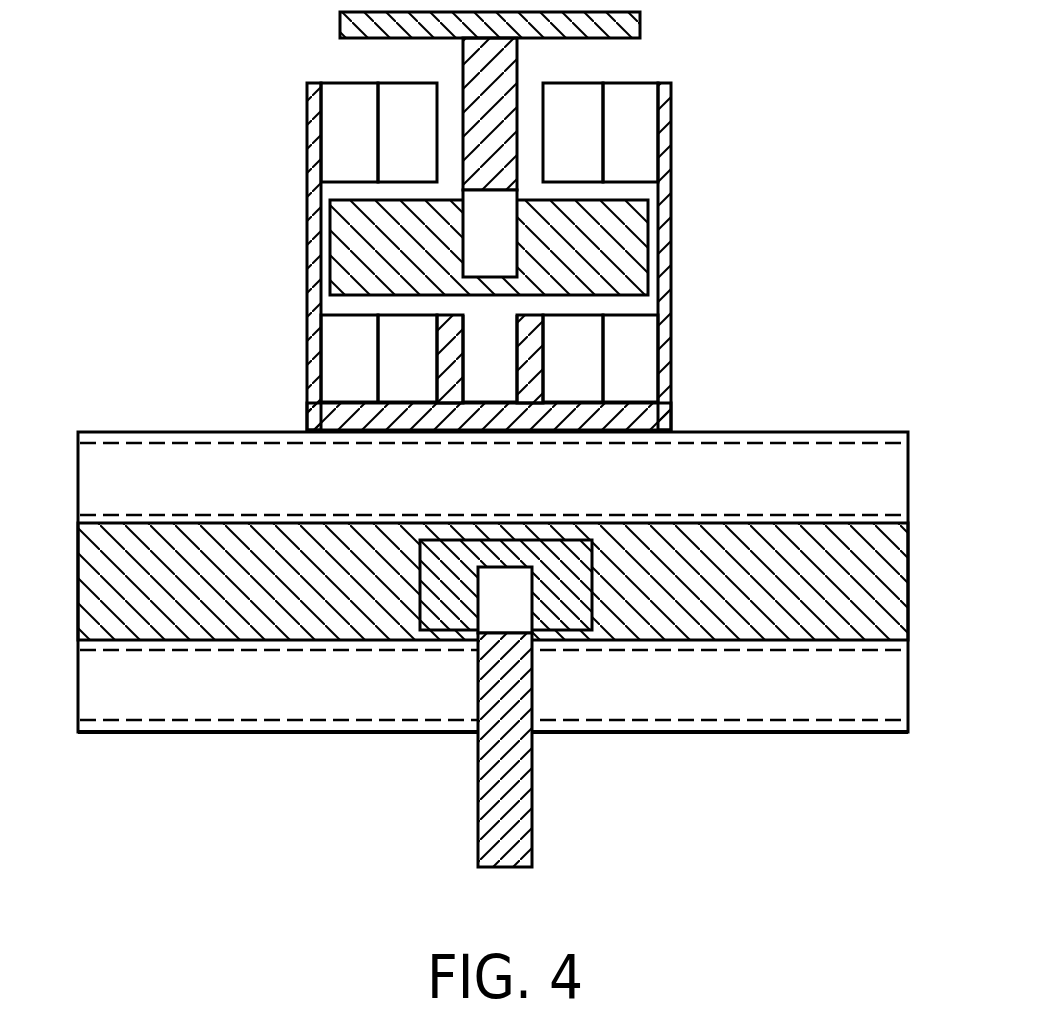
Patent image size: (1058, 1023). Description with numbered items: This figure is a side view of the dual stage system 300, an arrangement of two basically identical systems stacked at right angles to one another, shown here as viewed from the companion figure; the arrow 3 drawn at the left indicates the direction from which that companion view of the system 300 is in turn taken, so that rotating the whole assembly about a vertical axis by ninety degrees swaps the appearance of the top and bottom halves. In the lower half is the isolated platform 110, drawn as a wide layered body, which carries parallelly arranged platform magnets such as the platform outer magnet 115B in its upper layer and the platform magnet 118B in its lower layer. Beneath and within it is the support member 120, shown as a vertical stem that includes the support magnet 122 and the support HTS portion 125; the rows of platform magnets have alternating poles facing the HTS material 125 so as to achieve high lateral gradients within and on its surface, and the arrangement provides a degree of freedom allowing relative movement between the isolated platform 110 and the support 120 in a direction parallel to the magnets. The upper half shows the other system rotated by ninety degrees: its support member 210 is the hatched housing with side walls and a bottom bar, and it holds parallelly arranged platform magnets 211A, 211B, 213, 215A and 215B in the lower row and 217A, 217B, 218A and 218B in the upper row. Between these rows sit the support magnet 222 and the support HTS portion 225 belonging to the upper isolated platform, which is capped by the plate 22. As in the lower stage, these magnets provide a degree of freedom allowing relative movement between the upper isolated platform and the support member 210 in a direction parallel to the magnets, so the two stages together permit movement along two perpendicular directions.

The arrow 3 is at (142, 352).
The top plate 22 is at (640, 22).
The isolated platform 110 is at (798, 432).
The platform outer magnet 115B is at (847, 498).
The platform magnet 118B is at (493, 685).
The support member 120 is at (533, 785).
The support magnet 122 is at (503, 598).
The support HTS portion 125 is at (433, 598).
The support member 210 is at (314, 185).
The platform magnet 211A is at (343, 337).
The platform magnet 211B is at (395, 368).
The platform magnet 213 is at (490, 372).
The platform magnet 215A is at (573, 337).
The platform magnet 215B is at (633, 348).
The platform magnet 217A is at (342, 107).
The platform magnet 217B is at (398, 147).
The platform magnet 218A is at (573, 104).
The platform magnet 218B is at (628, 105).
The support magnet 222 is at (490, 222).
The support HTS portion 225 is at (370, 242).
The dual stage system 300 is at (840, 60).